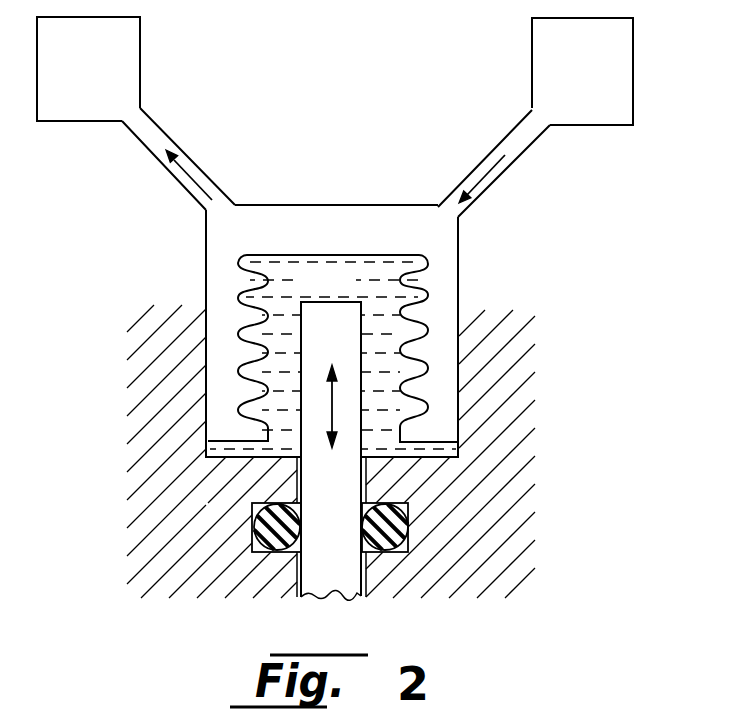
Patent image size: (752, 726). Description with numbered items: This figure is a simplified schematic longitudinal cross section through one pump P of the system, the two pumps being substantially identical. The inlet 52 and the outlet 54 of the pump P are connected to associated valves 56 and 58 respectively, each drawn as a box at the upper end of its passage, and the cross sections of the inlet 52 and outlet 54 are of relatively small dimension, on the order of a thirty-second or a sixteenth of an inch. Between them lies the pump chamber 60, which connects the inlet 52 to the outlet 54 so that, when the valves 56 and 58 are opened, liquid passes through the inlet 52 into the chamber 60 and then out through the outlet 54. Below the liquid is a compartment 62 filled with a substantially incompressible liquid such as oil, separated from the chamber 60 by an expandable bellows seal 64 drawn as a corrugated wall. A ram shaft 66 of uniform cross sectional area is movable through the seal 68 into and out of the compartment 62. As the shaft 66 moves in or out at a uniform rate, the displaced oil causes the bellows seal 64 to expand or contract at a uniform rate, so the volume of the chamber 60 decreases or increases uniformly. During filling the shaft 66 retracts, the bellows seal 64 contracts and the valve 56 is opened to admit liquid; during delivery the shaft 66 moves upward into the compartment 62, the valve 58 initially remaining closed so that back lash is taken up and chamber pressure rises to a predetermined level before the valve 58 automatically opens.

The inlet 52 is at (508, 172).
The outlet 54 is at (187, 156).
The valve 56 is at (625, 72).
The valve 58 is at (127, 73).
The pump chamber 60 is at (408, 180).
The compartment 62 is at (387, 310).
The expandable bellows seal 64 is at (268, 254).
The ram shaft 66 is at (348, 403).
The seal 68 is at (387, 542).
The pump P is at (172, 280).